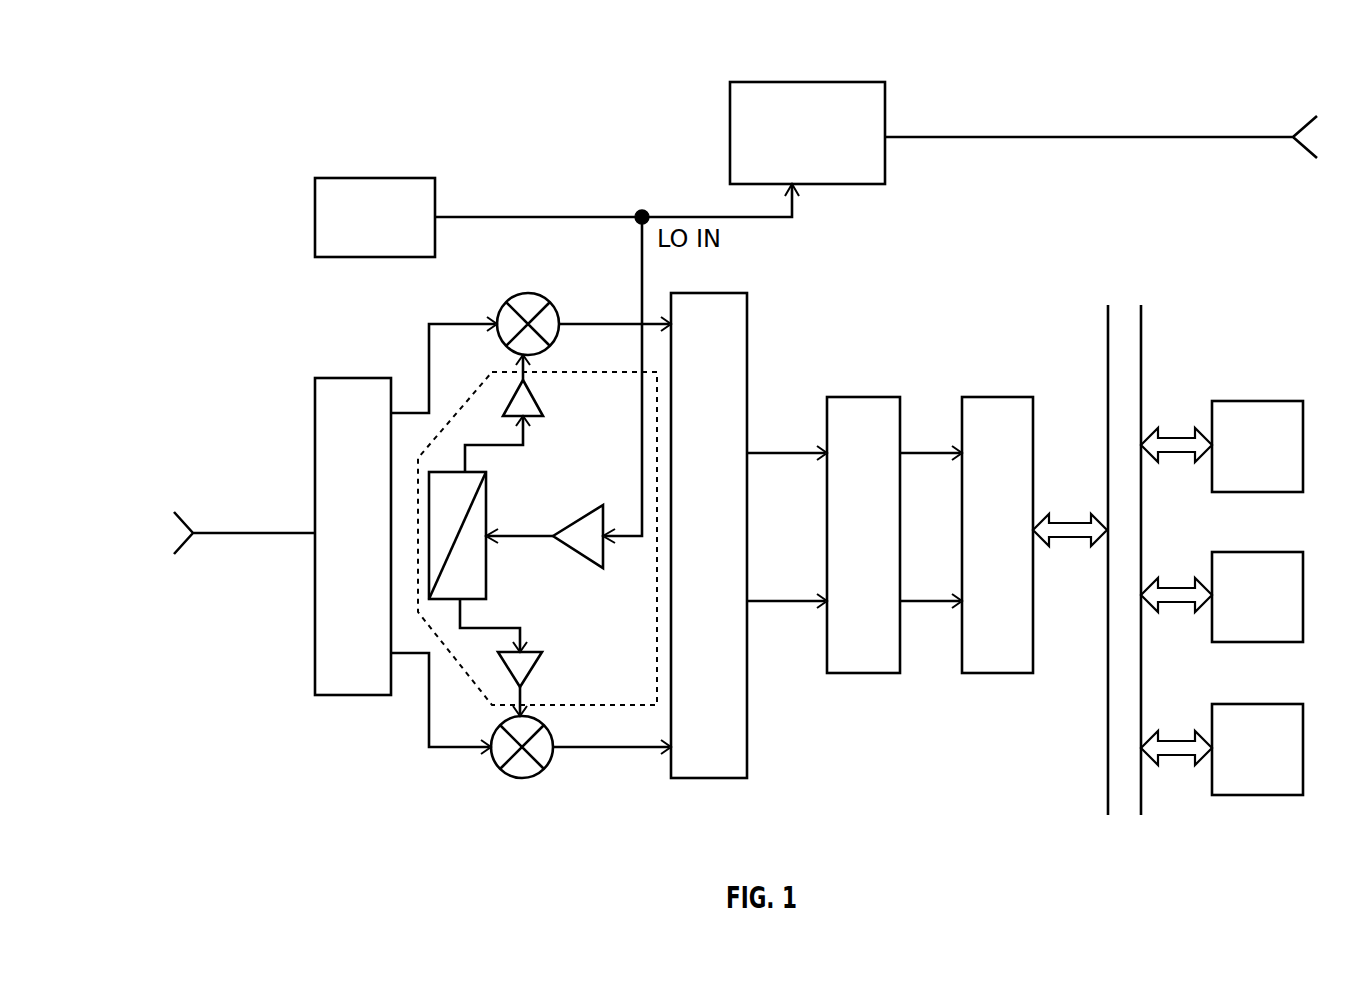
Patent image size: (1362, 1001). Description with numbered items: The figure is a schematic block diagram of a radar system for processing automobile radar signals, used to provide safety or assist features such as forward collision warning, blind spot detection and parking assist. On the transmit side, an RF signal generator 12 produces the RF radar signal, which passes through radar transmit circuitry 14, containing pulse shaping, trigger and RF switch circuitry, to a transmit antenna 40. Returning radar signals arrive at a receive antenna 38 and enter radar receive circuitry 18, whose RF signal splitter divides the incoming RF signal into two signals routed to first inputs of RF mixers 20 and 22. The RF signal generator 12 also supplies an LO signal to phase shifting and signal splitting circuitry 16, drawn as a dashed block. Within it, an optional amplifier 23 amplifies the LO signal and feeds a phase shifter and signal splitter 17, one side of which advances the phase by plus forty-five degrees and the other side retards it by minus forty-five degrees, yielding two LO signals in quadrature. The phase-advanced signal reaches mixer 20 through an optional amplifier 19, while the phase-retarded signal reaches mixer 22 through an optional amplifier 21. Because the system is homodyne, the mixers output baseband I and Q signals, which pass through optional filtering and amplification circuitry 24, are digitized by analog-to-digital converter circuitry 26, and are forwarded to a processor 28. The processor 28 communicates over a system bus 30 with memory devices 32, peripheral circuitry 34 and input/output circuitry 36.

The RF signal generator 12 is at (413, 178).
The radar transmit circuitry 14 is at (864, 82).
The phase shifting and signal splitting circuitry 16 is at (450, 657).
The phase shifter and signal splitter 17 is at (487, 495).
The radar receive circuitry 18 is at (315, 410).
The optional amplifier 19 is at (540, 400).
The RF mixer 20 is at (508, 300).
The optional amplifier 21 is at (545, 668).
The RF mixer 22 is at (515, 780).
The optional amplifier 23 is at (582, 558).
The optional filtering and amplification circuitry 24 is at (748, 732).
The analog-to-digital converter circuitry 26 is at (885, 397).
The processor 28 is at (1007, 397).
The system bus 30 is at (1141, 330).
The memory devices 32 is at (1260, 401).
The peripheral circuitry 34 is at (1288, 552).
The input/output circuitry 36 is at (1290, 704).
The receive antenna 38 is at (183, 545).
The transmit antenna 40 is at (1305, 162).